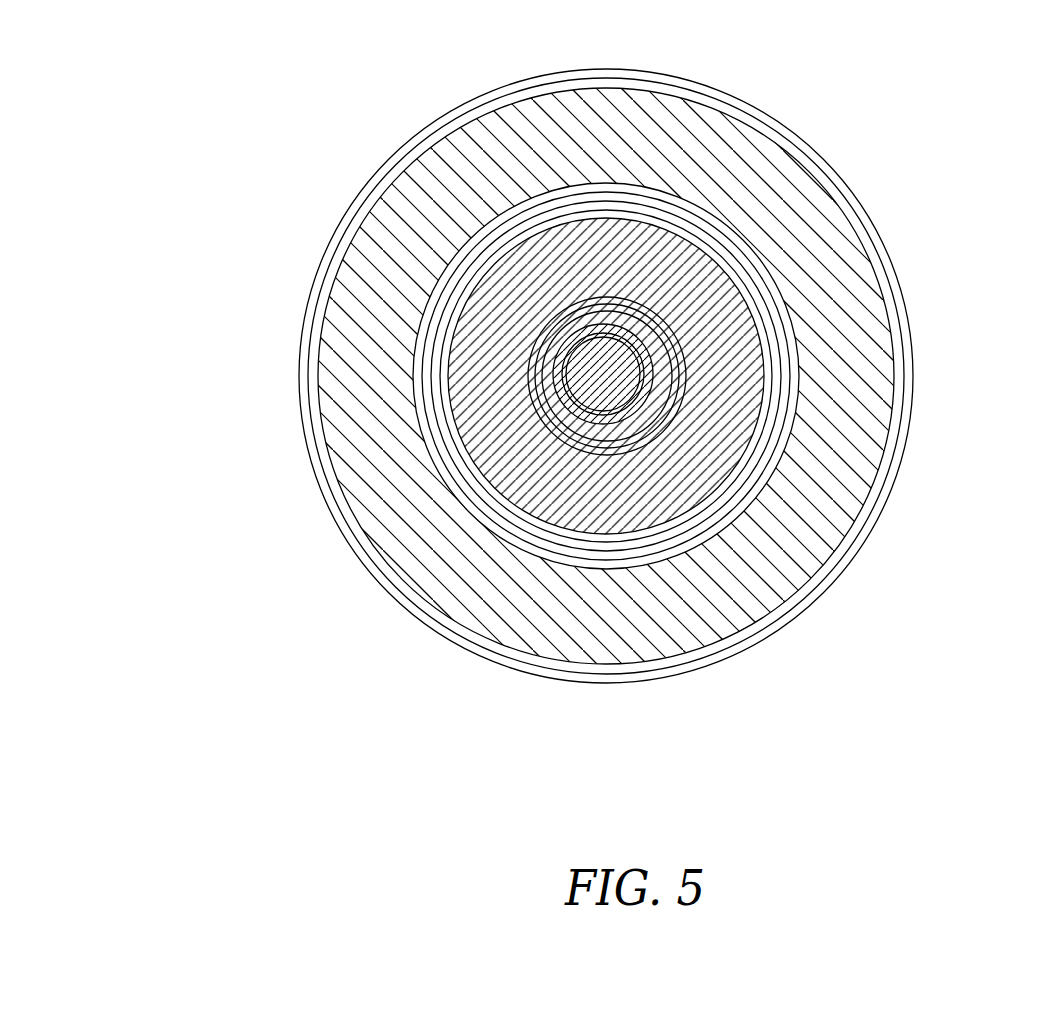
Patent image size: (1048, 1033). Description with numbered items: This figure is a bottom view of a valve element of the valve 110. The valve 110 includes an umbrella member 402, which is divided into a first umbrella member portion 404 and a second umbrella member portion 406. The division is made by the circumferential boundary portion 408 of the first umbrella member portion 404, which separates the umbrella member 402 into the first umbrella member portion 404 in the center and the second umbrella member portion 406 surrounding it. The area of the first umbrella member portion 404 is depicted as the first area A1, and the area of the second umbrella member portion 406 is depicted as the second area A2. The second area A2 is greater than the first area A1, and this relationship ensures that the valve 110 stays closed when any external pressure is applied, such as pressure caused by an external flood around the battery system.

The valve 110 is at (601, 349).
The umbrella member 402 is at (880, 232).
The first umbrella member portion 404 is at (720, 345).
The second umbrella member portion 406 is at (843, 447).
The circumferential boundary portion 408 is at (432, 375).
The first area A1 is at (727, 275).
The second area A2 is at (625, 376).